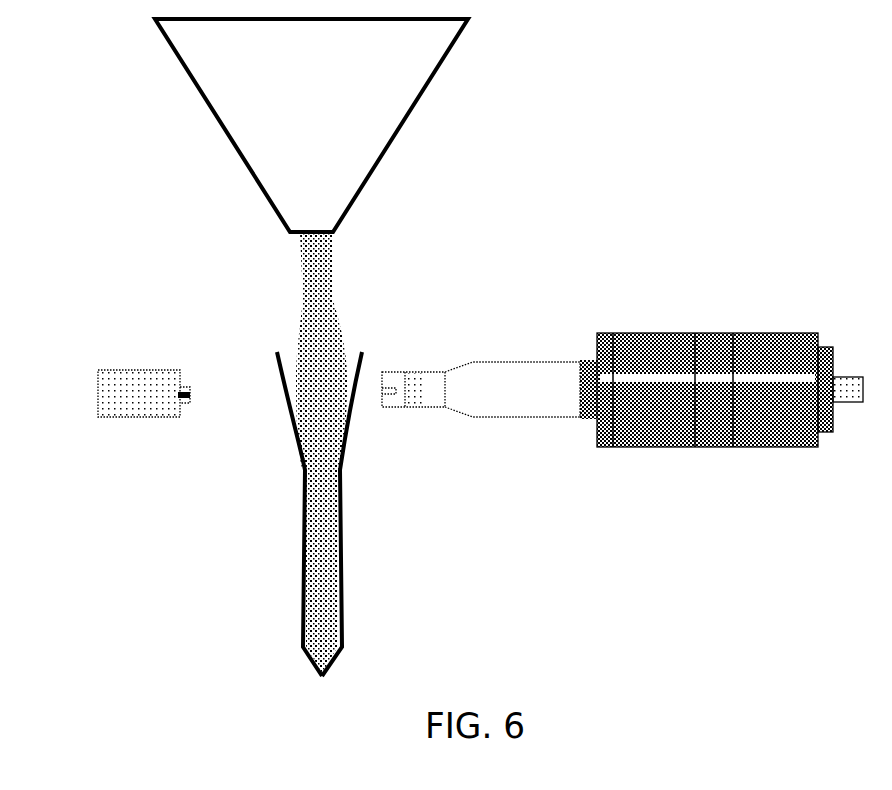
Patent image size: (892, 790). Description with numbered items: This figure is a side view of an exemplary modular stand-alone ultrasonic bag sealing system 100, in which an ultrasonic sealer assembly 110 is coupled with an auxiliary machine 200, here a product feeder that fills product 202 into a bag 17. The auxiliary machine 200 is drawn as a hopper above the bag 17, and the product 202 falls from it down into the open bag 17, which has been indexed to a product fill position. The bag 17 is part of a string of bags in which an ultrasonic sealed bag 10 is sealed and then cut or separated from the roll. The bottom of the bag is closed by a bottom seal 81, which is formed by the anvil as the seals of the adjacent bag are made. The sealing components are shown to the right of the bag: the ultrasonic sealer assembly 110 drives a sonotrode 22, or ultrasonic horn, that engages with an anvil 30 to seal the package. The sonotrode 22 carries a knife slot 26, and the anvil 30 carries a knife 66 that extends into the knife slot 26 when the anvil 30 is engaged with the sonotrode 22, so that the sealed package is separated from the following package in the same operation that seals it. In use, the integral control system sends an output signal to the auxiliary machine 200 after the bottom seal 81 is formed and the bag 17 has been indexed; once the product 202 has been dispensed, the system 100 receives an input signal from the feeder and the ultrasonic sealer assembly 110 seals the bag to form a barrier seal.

The modular stand-alone ultrasonic bag sealing system 100 is at (487, 146).
The auxiliary machine 200 is at (438, 50).
The product 202 is at (328, 270).
The bag 17 is at (343, 501).
The ultrasonic sealed bag 10 is at (341, 584).
The bottom seal 81 is at (320, 676).
The knife slot 26 is at (396, 391).
The sonotrode 22 is at (490, 366).
The ultrasonic sealer assembly 110 is at (600, 345).
The anvil 30 is at (110, 391).
The knife 66 is at (190, 394).